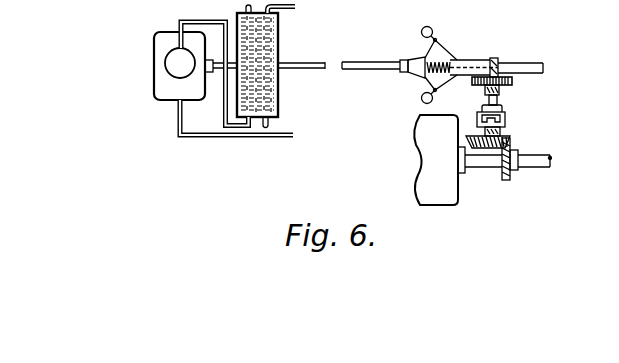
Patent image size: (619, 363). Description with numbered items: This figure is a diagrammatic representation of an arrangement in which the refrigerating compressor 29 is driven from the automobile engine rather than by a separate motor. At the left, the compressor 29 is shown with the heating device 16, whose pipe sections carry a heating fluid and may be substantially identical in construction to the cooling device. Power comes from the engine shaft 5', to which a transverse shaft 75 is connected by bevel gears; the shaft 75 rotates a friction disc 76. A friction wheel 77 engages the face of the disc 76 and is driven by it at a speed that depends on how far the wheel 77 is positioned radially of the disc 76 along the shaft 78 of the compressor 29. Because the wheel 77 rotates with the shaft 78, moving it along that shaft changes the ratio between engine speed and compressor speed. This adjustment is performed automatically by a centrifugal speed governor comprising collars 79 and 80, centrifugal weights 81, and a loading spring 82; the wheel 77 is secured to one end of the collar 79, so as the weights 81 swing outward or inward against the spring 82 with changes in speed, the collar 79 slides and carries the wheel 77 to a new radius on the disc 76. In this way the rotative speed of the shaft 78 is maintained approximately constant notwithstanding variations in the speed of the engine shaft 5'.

The compressor 29 is at (158, 73).
The heating device 16 is at (278, 43).
The collar 80 is at (412, 60).
The centrifugal weights 81 is at (432, 29).
The loading spring 82 is at (422, 82).
The collar 79 is at (470, 61).
The friction wheel 77 is at (498, 59).
The shaft of the compressor 78 is at (532, 65).
The friction disc 76 is at (512, 81).
The shaft 75 is at (497, 100).
The engine shaft 5' is at (489, 160).